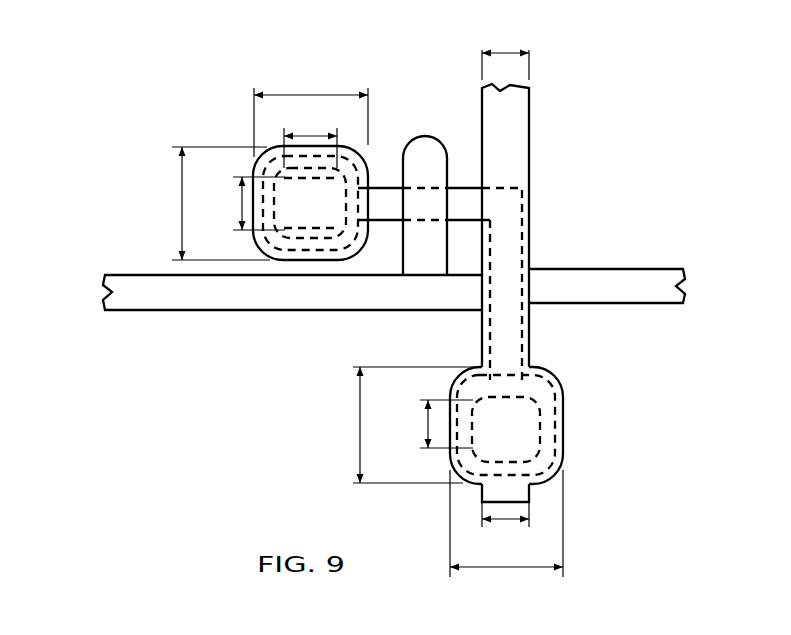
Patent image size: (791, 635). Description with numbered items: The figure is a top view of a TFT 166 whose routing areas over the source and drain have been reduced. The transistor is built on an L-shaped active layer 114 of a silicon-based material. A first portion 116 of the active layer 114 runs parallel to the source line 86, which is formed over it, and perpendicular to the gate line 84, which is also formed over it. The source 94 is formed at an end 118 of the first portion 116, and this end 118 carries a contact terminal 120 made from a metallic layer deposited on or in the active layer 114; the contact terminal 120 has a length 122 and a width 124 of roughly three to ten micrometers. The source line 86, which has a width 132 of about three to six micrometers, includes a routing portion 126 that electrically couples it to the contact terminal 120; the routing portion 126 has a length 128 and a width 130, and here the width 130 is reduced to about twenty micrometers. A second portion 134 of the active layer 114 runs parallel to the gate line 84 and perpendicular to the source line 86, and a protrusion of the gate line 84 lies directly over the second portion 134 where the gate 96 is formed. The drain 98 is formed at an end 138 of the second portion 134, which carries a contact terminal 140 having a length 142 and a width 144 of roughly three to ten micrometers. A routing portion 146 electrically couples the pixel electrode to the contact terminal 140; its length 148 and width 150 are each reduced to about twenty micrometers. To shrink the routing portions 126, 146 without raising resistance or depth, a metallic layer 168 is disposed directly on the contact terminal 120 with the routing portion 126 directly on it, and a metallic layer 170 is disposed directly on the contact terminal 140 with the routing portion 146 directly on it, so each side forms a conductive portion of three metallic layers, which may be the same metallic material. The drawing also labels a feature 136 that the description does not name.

The gate line 84 is at (195, 310).
The source line 86 is at (529, 128).
The source 94 is at (456, 465).
The gate 96 is at (424, 211).
The drain 98 is at (238, 202).
The active layer 114 is at (462, 187).
The first portion 116 is at (522, 222).
The end 118 is at (548, 392).
The contact terminal 120 is at (520, 405).
The length 122 is at (424, 430).
The width 124 is at (498, 525).
The routing portion 126 is at (562, 462).
The length 128 is at (358, 428).
The width 130 is at (470, 570).
The width 132 is at (507, 52).
The second portion 134 is at (383, 222).
The U-shaped bend 136 is at (413, 152).
The end 138 is at (320, 242).
The contact terminal 140 is at (312, 217).
The length 142 is at (241, 206).
The width 144 is at (318, 133).
The routing portion 146 is at (257, 250).
The length 148 is at (181, 206).
The width 150 is at (310, 93).
The TFT 166 is at (567, 263).
The metallic layer 168 is at (565, 415).
The metallic layer 170 is at (262, 165).